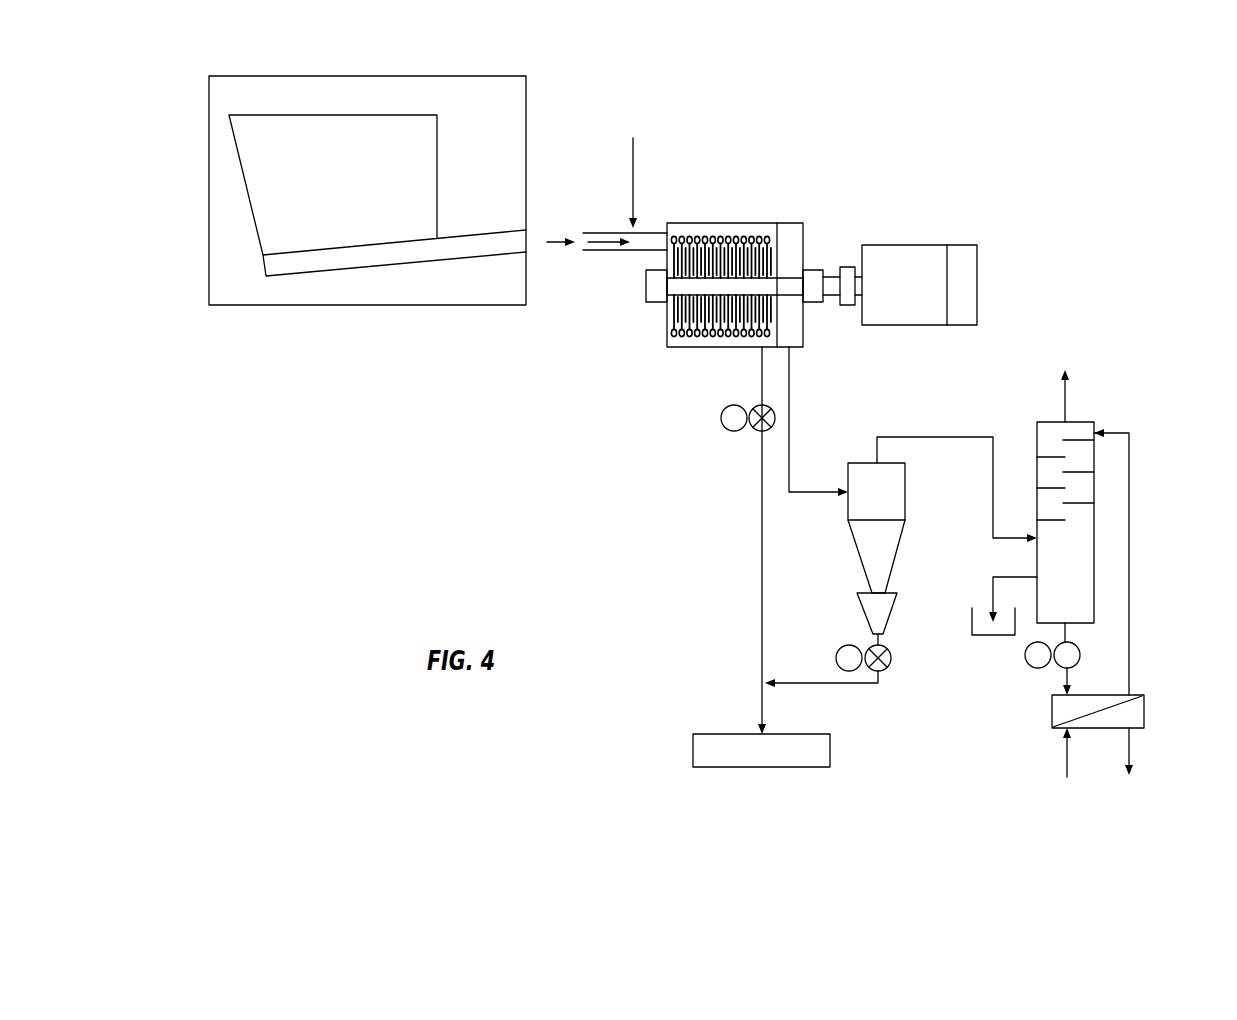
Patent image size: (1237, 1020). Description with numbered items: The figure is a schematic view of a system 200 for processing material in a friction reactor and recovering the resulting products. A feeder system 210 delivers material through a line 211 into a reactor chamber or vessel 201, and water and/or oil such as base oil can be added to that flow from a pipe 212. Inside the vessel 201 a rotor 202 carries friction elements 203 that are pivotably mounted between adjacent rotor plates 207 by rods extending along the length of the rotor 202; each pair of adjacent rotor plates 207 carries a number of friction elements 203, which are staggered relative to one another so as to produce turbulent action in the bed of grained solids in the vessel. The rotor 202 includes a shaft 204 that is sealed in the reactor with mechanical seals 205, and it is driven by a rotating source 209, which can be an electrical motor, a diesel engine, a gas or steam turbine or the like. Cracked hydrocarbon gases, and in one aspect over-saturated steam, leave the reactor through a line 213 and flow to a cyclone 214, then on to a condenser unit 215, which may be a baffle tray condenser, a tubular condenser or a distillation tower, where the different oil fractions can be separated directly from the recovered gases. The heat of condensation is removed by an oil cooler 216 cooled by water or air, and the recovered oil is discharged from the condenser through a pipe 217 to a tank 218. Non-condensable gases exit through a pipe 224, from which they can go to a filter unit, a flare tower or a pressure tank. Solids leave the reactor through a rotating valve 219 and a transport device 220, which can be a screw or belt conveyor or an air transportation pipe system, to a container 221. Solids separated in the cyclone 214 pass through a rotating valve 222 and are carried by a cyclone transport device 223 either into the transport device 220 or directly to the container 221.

The system 200 is at (1008, 163).
The reactor chamber or vessel 201 is at (705, 236).
The rotor 202 is at (790, 273).
The friction elements 203 is at (752, 236).
The shaft 204 is at (685, 292).
The mechanical seals 205 is at (646, 293).
The rotor plates 207 is at (688, 337).
The rotating source 209 is at (913, 245).
The feeder system 210 is at (272, 306).
The line 211 is at (600, 232).
The pipe 212 is at (632, 152).
The line 213 is at (793, 368).
The cyclone 214 is at (905, 502).
The condenser unit 215 is at (1096, 568).
The oil cooler 216 is at (1146, 710).
The pipe 217 is at (993, 582).
The tank 218 is at (995, 638).
The rotating valve 219 is at (733, 432).
The transport device 220 is at (760, 533).
The container 221 is at (831, 750).
The rotating valve 222 is at (893, 665).
The cyclone transport device 223 is at (834, 686).
The pipe 224 is at (1067, 405).